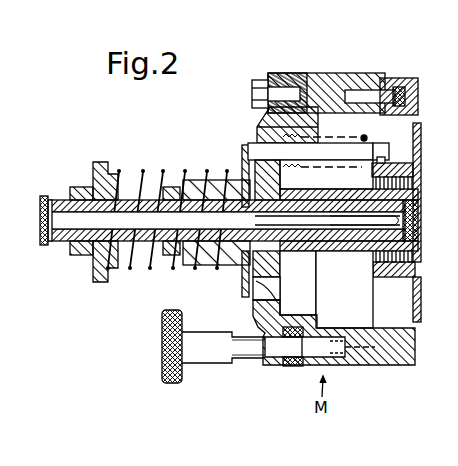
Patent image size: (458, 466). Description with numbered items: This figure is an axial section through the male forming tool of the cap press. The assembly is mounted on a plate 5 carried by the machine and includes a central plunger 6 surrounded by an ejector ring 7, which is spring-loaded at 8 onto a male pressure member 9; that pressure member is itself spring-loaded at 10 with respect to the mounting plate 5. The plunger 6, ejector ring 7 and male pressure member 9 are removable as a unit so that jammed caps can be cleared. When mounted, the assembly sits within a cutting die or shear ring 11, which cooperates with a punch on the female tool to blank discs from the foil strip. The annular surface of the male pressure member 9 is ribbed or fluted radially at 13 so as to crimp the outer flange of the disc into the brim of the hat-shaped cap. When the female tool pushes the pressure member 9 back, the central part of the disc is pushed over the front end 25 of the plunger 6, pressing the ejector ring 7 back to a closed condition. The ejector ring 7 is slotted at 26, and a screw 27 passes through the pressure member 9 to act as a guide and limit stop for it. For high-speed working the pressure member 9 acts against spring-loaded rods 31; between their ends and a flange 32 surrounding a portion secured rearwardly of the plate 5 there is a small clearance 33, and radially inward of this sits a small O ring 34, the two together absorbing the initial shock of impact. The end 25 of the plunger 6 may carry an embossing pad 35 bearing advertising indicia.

The mounting plate 5 is at (274, 187).
The plunger 6 is at (296, 244).
The ejector ring 7 is at (418, 264).
The spring loading 8 is at (384, 259).
The male pressure member 9 is at (418, 300).
The spring loading 10 is at (362, 137).
The cutting die or shear ring 11 is at (413, 114).
The radial ribs or flutes 13 is at (420, 141).
The front end of plunger 25 is at (414, 250).
The slot 26 is at (414, 194).
The screw 27 is at (404, 176).
The spring-loaded rods 31 is at (328, 158).
The flange 32 is at (242, 152).
The clearance 33 is at (252, 141).
The O ring 34 is at (268, 279).
The embossing pad 35 is at (412, 236).